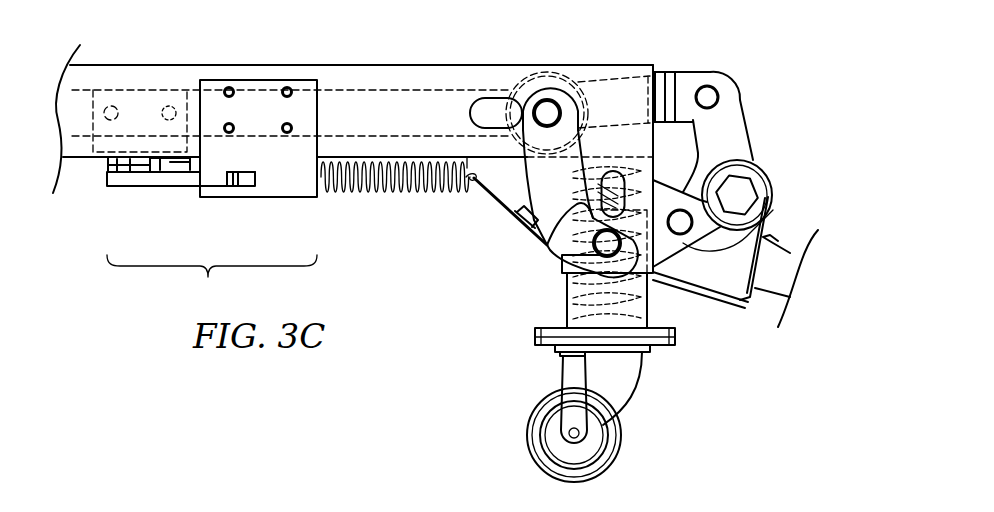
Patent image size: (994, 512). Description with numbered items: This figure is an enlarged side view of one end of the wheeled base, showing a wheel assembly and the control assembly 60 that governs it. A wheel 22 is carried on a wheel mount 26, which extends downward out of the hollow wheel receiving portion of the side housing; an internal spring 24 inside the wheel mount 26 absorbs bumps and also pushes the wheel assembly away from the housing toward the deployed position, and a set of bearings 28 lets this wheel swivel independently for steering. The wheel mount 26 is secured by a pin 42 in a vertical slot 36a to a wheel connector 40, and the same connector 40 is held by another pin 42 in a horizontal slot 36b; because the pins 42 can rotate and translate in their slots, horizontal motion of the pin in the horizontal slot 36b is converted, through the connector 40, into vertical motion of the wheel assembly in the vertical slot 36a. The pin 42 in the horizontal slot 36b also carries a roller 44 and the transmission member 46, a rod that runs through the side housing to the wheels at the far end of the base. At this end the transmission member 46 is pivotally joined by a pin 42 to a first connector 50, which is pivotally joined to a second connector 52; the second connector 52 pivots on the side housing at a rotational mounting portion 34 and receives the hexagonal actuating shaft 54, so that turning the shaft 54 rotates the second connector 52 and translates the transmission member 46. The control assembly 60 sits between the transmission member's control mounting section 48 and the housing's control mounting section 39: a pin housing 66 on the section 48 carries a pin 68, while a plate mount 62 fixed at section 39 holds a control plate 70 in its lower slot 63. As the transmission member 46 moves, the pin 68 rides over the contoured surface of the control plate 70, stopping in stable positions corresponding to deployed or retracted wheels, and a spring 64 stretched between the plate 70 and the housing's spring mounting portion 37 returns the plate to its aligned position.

The wheel 22 is at (623, 415).
The spring 24 is at (587, 293).
The wheel mount 26 is at (648, 313).
The bearings 28 is at (550, 348).
The rotational mounting portion 34 is at (758, 213).
The vertical slot 36a is at (547, 245).
The horizontal slot 36b is at (487, 107).
The spring mounting portion 37 is at (492, 187).
The control mounting section 39 is at (293, 62).
The wheel connector 40 is at (567, 143).
The pin 42 is at (548, 112).
The roller 44 is at (538, 77).
The transmission member 46 is at (400, 113).
The control mounting section 48 is at (167, 83).
The first connector 50 is at (683, 97).
The second connector 52 is at (722, 140).
The actuating shaft 54 is at (733, 195).
The control assembly 60 is at (212, 279).
The plate mount 62 is at (253, 113).
The lower slot 63 is at (245, 182).
The spring 64 is at (368, 190).
The pin housing 66 is at (142, 107).
The pin 68 is at (142, 172).
The control plate 70 is at (175, 180).